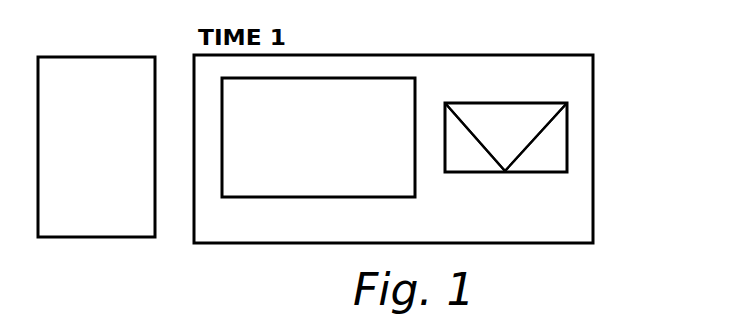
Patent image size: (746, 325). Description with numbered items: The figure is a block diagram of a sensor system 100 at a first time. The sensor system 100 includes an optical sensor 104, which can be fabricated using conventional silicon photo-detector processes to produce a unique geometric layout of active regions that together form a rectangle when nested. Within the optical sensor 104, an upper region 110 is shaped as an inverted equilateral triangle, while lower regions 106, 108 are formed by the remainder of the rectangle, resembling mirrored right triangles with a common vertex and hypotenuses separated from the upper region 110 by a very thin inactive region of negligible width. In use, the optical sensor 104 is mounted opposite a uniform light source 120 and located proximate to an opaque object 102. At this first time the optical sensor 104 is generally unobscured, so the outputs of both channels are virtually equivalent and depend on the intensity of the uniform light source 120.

The sensor system 100 is at (268, 229).
The opaque object 102 is at (340, 182).
The optical sensor 104 is at (567, 128).
The lower region 106 is at (478, 160).
The lower region 108 is at (536, 160).
The upper region 110 is at (505, 115).
The uniform light source 120 is at (118, 158).